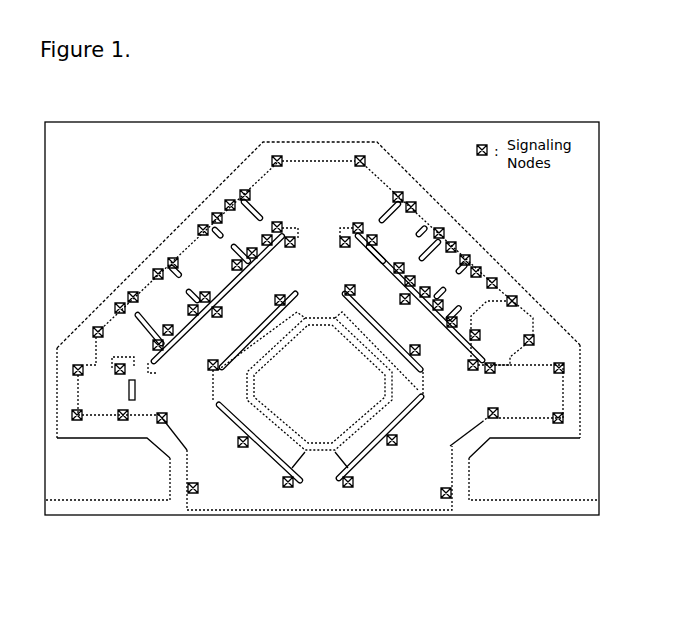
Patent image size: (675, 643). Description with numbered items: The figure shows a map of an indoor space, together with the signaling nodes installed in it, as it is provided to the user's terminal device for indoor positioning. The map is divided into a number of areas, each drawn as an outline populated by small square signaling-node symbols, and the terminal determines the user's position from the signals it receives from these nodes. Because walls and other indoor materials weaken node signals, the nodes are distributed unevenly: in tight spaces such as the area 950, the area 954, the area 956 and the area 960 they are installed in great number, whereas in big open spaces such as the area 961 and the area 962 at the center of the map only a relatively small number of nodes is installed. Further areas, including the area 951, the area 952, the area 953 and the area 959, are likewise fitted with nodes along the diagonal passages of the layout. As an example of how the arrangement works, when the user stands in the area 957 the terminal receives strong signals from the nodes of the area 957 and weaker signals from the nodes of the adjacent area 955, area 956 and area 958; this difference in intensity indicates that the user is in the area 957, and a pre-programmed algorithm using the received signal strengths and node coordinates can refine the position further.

The area 950 is at (516, 391).
The area 951 is at (489, 326).
The area 952 is at (458, 288).
The area 953 is at (432, 264).
The area 954 is at (384, 243).
The area 955 is at (318, 179).
The area 956 is at (262, 246).
The area 957 is at (188, 267).
The area 958 is at (149, 302).
The area 959 is at (133, 330).
The area 960 is at (116, 388).
The area 961 is at (221, 306).
The area 962 is at (406, 324).